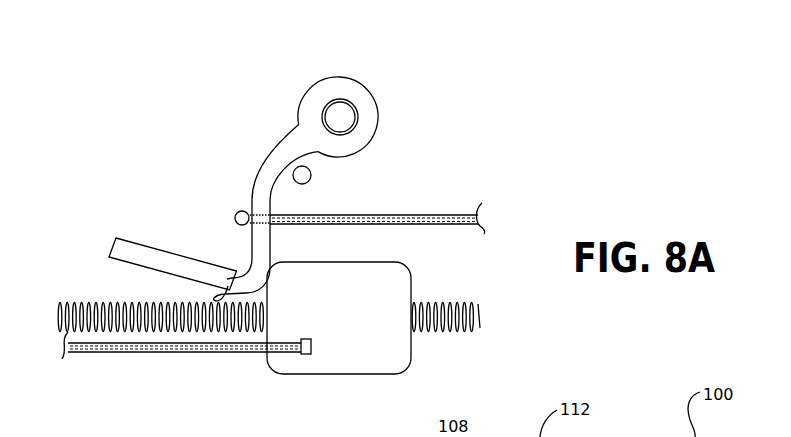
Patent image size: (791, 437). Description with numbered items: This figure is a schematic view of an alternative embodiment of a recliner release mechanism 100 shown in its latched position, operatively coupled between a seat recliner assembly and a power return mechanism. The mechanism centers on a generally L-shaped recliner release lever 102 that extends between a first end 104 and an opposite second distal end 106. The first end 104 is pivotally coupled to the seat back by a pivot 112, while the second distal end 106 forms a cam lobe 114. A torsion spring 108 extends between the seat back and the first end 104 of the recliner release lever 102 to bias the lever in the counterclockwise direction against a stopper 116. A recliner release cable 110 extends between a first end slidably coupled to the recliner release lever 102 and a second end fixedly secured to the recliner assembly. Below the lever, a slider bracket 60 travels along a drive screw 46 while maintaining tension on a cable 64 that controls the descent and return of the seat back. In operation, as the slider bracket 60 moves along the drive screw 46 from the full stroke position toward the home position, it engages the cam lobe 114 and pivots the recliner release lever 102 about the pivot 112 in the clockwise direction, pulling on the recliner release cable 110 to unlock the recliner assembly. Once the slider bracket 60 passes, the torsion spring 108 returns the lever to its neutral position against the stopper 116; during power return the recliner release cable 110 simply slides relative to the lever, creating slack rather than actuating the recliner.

The recliner release mechanism 100 is at (482, 96).
The recliner release lever 102 is at (277, 168).
The first end 104 is at (378, 98).
The torsion spring 108 is at (322, 108).
The pivot 112 is at (343, 108).
The stopper 116 is at (310, 173).
The cam lobe 114 is at (207, 287).
The recliner release cable 110 is at (425, 215).
The second distal end 106 is at (137, 255).
The drive screw 46 is at (97, 306).
The cable 64 is at (155, 352).
The slider bracket 60 is at (388, 357).